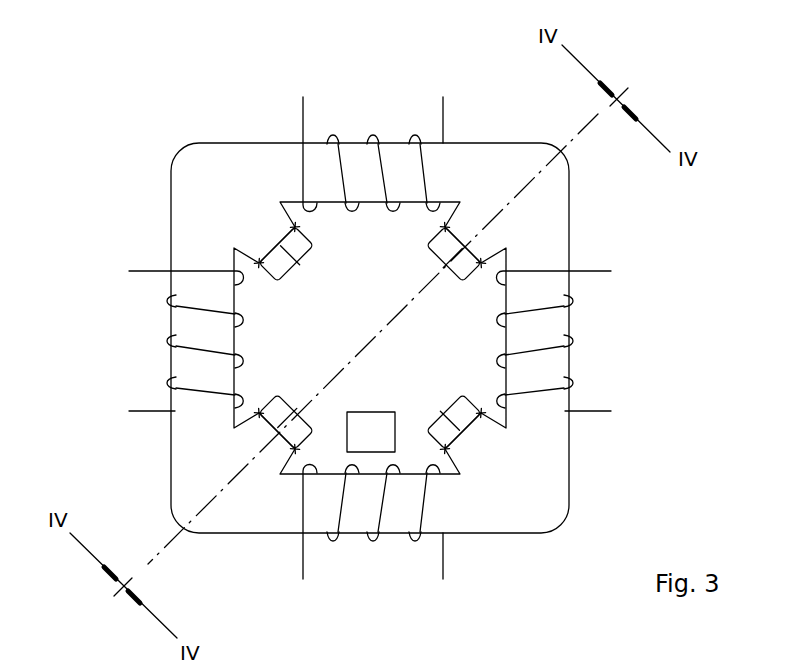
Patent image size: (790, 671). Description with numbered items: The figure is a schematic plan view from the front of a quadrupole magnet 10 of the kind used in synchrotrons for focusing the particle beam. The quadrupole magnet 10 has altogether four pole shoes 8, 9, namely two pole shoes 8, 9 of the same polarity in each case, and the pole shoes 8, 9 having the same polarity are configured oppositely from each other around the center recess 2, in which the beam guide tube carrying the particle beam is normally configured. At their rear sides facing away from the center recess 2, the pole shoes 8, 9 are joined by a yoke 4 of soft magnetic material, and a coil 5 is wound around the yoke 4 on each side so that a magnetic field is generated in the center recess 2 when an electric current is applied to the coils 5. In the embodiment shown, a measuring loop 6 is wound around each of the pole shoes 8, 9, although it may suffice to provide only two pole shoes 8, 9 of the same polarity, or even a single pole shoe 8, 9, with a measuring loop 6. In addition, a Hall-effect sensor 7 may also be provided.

The quadrupole magnet 10 is at (136, 126).
The center recess 2 is at (372, 333).
The yoke 4 is at (247, 158).
The coil 5 is at (442, 125).
The measuring loop 6 is at (272, 250).
The Hall-effect sensor 7 is at (378, 445).
The pole shoe 8 is at (437, 257).
The pole shoe 9 is at (302, 262).